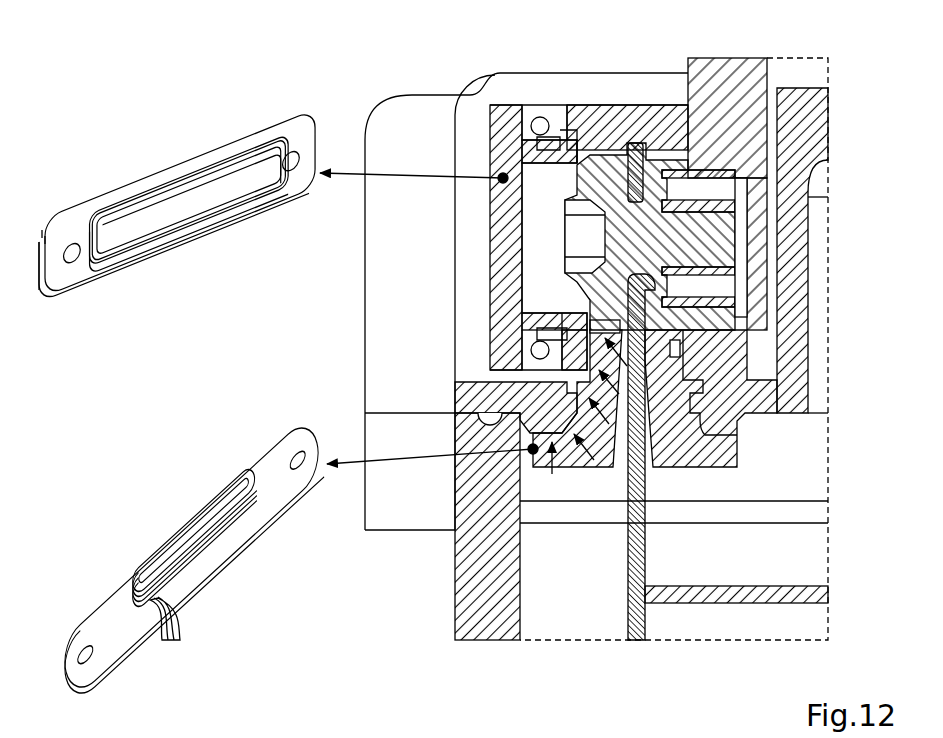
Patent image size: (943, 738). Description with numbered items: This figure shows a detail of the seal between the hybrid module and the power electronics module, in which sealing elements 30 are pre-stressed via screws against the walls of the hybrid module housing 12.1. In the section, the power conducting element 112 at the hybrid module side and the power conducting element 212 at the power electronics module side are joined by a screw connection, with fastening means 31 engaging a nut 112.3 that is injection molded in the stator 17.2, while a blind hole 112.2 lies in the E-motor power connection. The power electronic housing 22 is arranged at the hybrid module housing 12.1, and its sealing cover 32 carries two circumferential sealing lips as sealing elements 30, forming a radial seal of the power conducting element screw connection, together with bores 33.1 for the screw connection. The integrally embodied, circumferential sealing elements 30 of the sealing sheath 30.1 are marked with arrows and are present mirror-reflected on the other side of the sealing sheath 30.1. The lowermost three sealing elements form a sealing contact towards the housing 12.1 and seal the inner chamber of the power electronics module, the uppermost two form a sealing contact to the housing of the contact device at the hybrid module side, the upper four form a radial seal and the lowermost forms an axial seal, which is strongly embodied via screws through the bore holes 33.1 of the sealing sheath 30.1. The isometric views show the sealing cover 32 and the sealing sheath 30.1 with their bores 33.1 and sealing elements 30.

The hybrid module housing 12.1 is at (455, 400).
The stator 17.2 is at (513, 93).
The power electronic housing 22 is at (455, 582).
The sealing elements 30 is at (568, 133).
The sealing sheath 30.1 is at (250, 473).
The fastening means 31 is at (600, 157).
The sealing cover 32 is at (207, 150).
The bores 33.1 is at (284, 140).
The power conducting element 112 is at (740, 107).
The blind hole 112.2 is at (740, 288).
The nut 112.3 is at (690, 165).
The power conducting element 212 is at (628, 590).